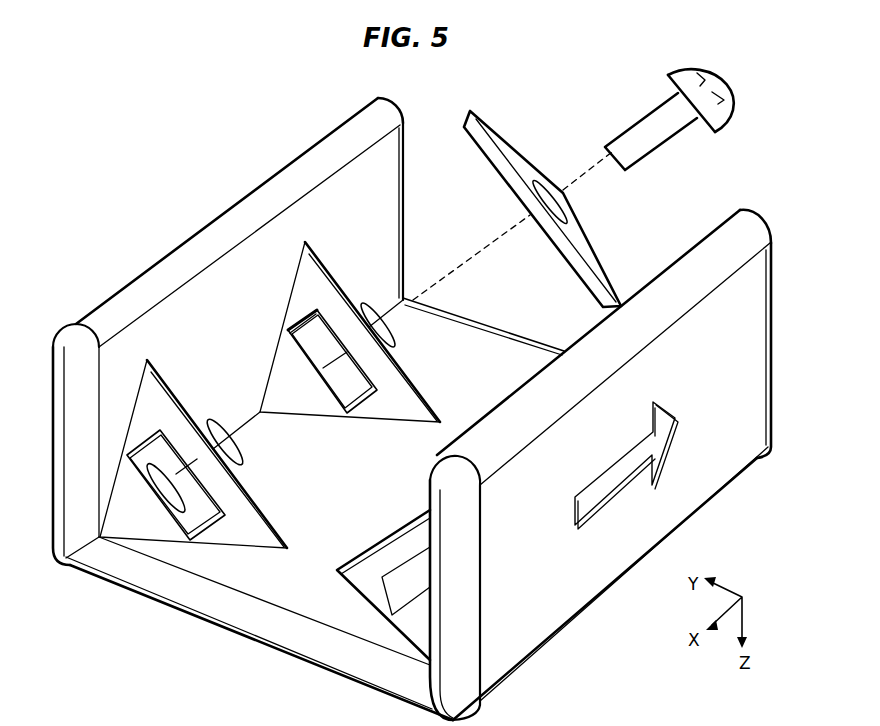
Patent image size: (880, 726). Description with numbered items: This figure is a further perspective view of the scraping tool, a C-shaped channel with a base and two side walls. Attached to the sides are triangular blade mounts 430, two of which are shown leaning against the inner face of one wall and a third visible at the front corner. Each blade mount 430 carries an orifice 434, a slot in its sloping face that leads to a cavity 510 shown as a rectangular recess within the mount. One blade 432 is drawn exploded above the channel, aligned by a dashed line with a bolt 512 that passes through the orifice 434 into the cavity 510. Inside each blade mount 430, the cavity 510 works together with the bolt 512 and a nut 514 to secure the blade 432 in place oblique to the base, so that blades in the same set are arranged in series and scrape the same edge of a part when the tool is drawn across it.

The blade mount 430 is at (252, 483).
The blade 432 is at (542, 160).
The orifice 434 is at (233, 428).
The cavity 510 is at (330, 399).
The bolt 512 is at (683, 80).
The nut 514 is at (312, 336).